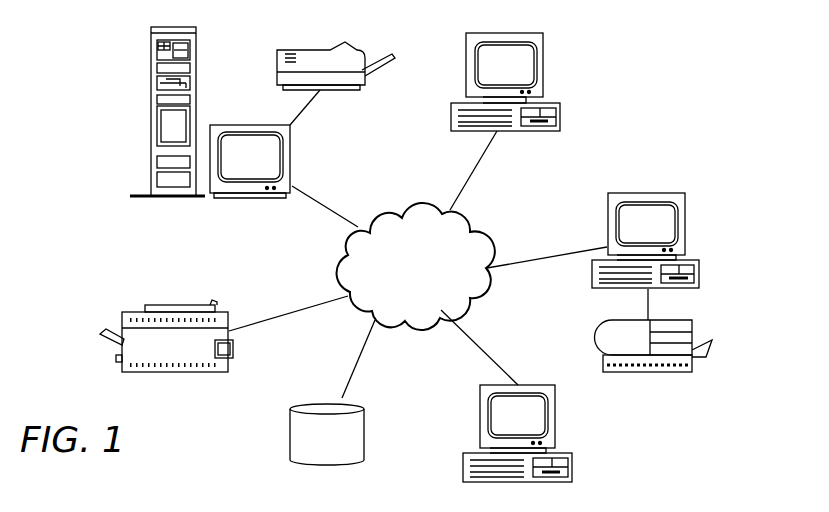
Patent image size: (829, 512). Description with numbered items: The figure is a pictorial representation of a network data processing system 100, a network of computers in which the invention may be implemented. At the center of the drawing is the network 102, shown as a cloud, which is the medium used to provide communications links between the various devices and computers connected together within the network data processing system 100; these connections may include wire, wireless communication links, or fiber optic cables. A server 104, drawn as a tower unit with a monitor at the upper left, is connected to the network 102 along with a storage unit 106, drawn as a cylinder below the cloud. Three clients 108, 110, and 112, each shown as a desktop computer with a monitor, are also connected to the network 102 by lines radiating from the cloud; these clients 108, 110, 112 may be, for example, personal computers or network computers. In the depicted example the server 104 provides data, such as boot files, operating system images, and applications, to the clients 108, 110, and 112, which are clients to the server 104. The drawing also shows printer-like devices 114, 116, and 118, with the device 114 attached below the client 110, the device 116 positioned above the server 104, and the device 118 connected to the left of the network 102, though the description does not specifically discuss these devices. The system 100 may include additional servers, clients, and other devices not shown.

The network data processing system 100 is at (672, 136).
The network 102 is at (436, 276).
The server 104 is at (238, 124).
The storage unit 106 is at (290, 434).
The client 108 is at (545, 66).
The client 110 is at (687, 223).
The client 112 is at (557, 418).
The printer 114 is at (692, 335).
The printer 116 is at (352, 92).
The printer 118 is at (132, 312).